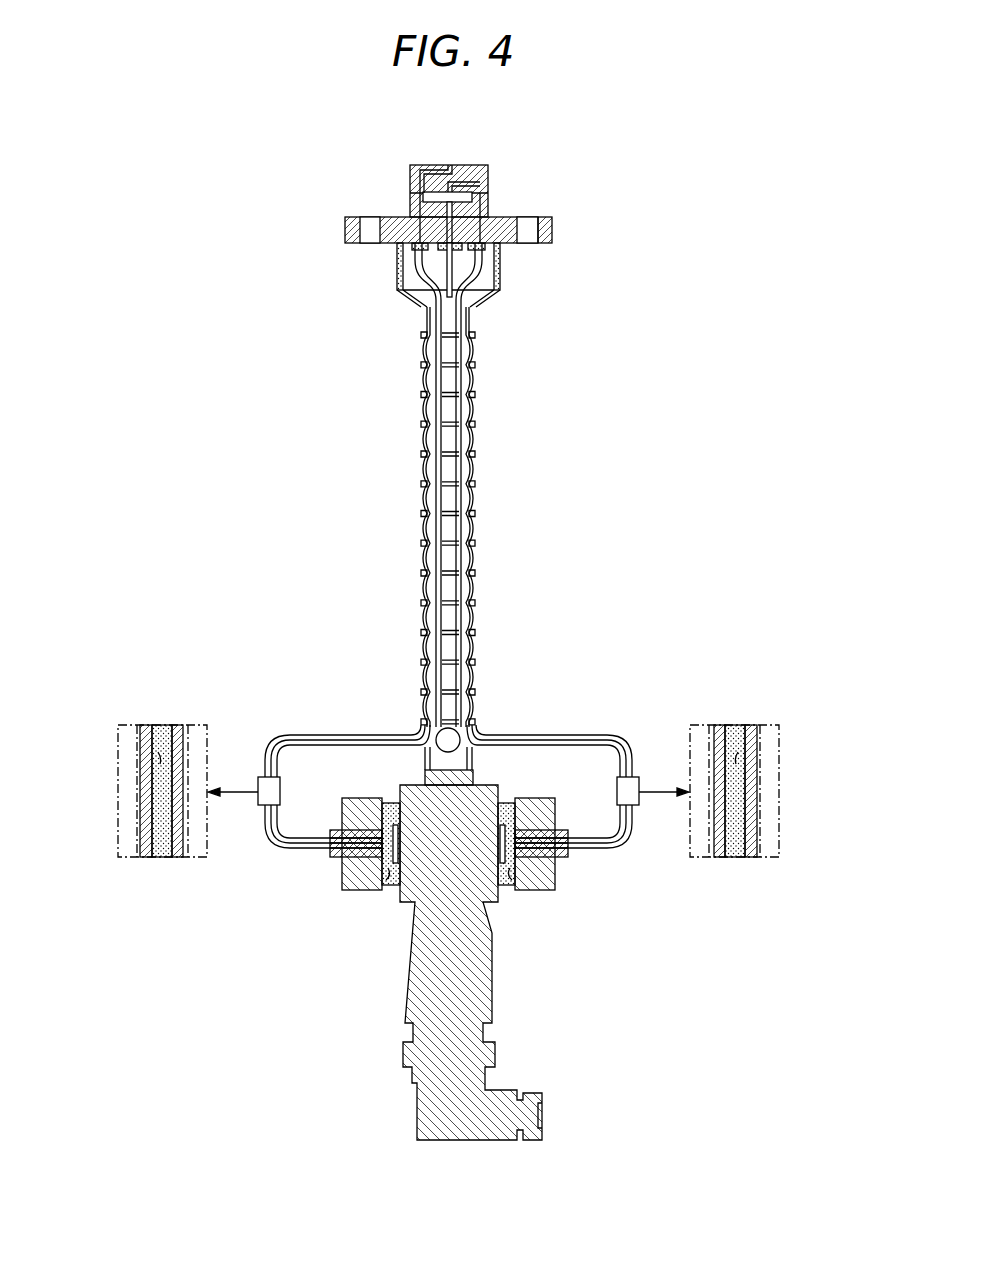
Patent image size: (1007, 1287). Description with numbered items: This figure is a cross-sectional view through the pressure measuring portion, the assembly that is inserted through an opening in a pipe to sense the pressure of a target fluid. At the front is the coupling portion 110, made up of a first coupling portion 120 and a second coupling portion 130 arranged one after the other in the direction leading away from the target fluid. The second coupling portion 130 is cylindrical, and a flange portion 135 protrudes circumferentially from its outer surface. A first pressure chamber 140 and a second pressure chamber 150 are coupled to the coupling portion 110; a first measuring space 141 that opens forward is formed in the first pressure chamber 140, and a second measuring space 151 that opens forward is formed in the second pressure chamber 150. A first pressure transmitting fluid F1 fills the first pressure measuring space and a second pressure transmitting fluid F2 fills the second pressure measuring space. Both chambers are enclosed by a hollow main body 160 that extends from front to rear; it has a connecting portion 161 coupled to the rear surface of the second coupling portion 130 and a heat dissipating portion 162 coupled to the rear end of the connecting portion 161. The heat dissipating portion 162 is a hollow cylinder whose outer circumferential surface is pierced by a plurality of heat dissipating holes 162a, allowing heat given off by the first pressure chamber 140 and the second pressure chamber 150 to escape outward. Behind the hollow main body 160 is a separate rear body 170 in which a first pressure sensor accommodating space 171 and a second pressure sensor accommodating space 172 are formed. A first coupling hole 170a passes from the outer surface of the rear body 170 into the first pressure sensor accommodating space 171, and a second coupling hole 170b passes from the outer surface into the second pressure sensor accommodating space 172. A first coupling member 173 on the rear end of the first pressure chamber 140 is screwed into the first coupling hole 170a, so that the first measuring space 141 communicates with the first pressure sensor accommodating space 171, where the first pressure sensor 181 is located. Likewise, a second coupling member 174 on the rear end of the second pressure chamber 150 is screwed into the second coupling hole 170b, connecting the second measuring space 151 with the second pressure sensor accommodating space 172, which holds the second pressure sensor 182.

The coupling portion 110 is at (641, 175).
The first coupling portion 120 is at (500, 181).
The second coupling portion 130 is at (565, 235).
The flange portion 135 is at (552, 245).
The hollow main body 160 is at (585, 330).
The connecting portion 161 is at (491, 300).
The heat dissipating portion 162 is at (466, 388).
The heat dissipating holes 162a is at (476, 466).
The rear body 170 is at (512, 1002).
The first coupling hole 170a is at (350, 857).
The second coupling hole 170b is at (548, 857).
The first pressure sensor accommodating space 171 is at (388, 876).
The second pressure sensor accommodating space 172 is at (512, 876).
The first coupling member 173 is at (358, 830).
The second coupling member 174 is at (541, 830).
The first pressure sensor 181 is at (386, 886).
The second pressure sensor 182 is at (510, 886).
The first pressure chamber 140 is at (134, 787).
The first measuring space 141 is at (158, 757).
The second pressure chamber 150 is at (763, 787).
The second measuring space 151 is at (738, 757).
The first pressure transmitting fluid F1 is at (157, 823).
The second pressure transmitting fluid F2 is at (740, 823).